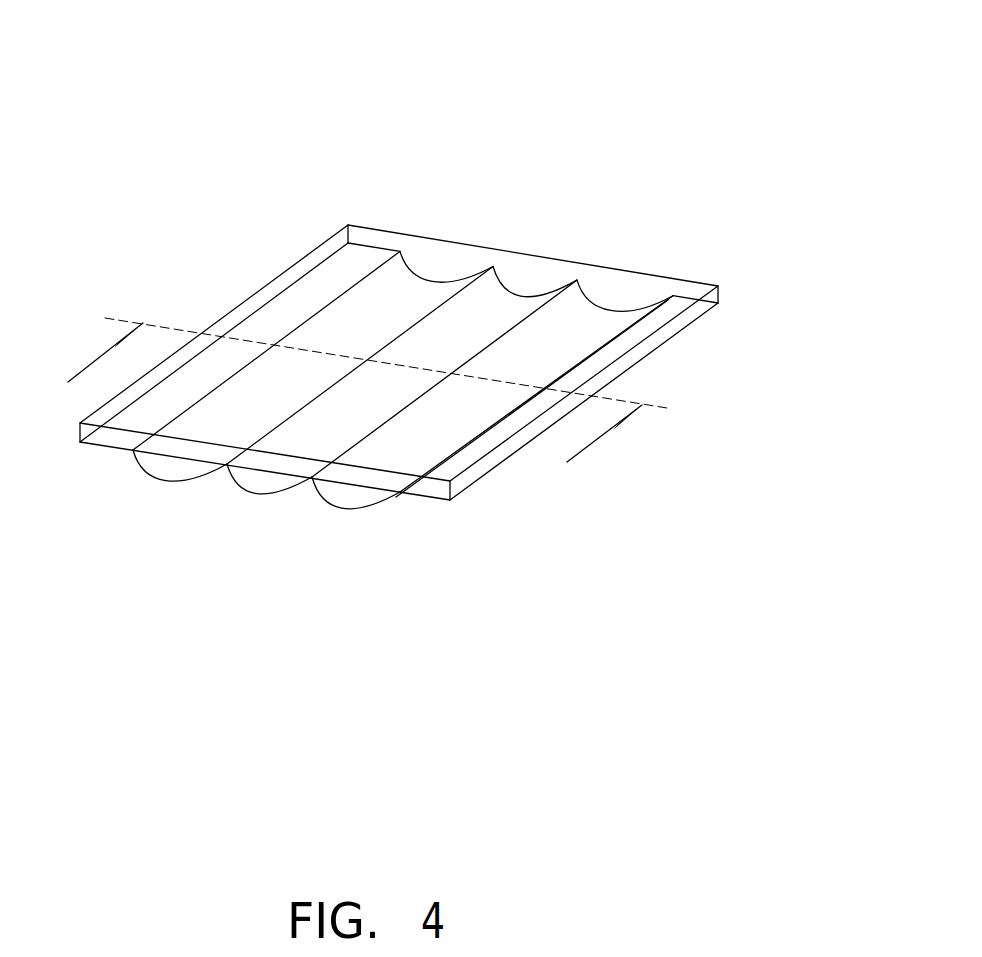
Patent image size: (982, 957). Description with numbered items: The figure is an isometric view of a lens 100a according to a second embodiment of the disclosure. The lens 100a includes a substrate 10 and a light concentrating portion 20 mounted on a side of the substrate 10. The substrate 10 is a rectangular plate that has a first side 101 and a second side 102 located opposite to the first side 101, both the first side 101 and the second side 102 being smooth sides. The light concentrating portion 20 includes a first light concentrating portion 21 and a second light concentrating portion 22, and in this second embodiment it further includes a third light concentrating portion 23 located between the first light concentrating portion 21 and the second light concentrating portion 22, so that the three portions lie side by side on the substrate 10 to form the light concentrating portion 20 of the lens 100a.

The lens 100a is at (382, 82).
The substrate 10 is at (837, 306).
The first side 101 is at (622, 285).
The second side 102 is at (678, 335).
The light concentrating portion 20 is at (393, 600).
The first light concentrating portion 21 is at (173, 468).
The second light concentrating portion 22 is at (370, 492).
The third light concentrating portion 23 is at (268, 478).